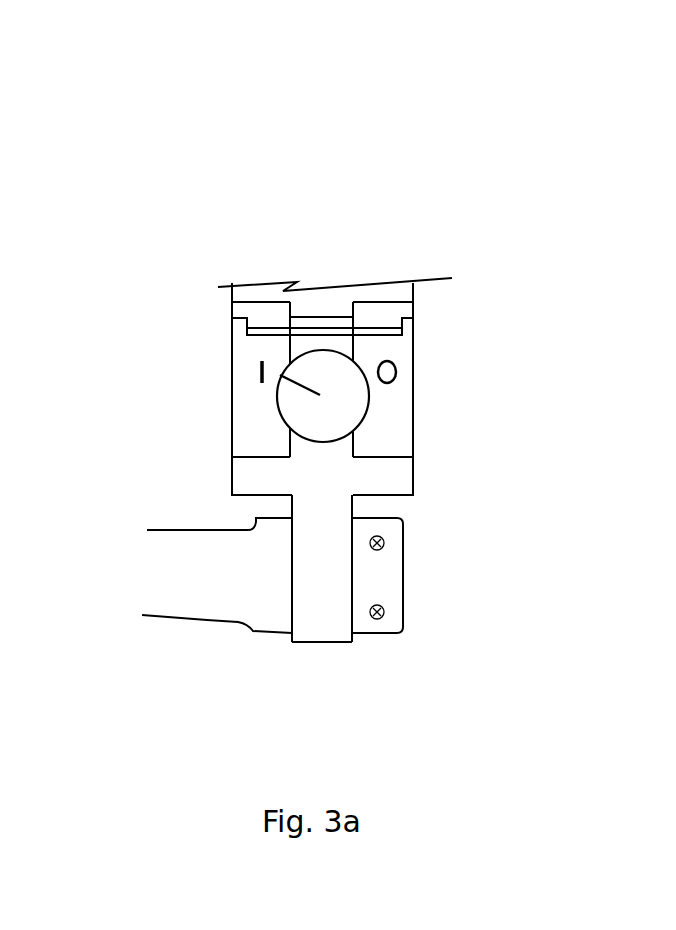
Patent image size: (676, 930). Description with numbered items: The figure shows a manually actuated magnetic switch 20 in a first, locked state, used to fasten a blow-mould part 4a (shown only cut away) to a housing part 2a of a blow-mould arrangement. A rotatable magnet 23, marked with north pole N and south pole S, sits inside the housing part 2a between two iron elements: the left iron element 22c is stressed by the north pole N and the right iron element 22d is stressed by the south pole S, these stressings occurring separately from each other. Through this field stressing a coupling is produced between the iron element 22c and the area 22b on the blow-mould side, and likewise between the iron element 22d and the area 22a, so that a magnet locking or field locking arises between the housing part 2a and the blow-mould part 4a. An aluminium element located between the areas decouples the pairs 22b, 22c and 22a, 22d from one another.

The magnet holder assembly 20 is at (234, 391).
The housing part 2a is at (363, 558).
The blow-mould part 4a is at (425, 204).
The area 22a is at (437, 217).
The area 22b is at (261, 227).
The iron element 22c is at (171, 395).
The iron element 22d is at (498, 392).
The magnet 23 is at (324, 279).